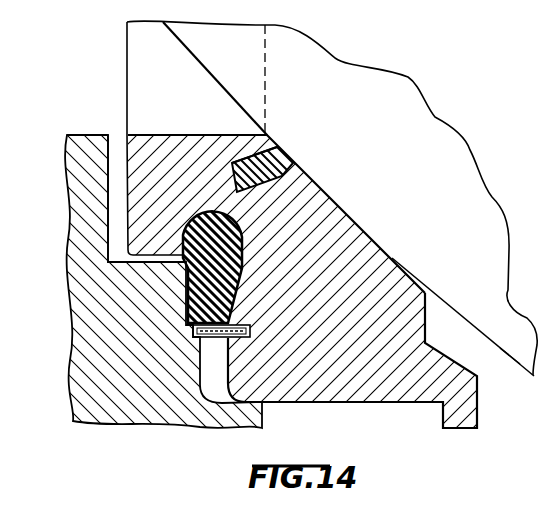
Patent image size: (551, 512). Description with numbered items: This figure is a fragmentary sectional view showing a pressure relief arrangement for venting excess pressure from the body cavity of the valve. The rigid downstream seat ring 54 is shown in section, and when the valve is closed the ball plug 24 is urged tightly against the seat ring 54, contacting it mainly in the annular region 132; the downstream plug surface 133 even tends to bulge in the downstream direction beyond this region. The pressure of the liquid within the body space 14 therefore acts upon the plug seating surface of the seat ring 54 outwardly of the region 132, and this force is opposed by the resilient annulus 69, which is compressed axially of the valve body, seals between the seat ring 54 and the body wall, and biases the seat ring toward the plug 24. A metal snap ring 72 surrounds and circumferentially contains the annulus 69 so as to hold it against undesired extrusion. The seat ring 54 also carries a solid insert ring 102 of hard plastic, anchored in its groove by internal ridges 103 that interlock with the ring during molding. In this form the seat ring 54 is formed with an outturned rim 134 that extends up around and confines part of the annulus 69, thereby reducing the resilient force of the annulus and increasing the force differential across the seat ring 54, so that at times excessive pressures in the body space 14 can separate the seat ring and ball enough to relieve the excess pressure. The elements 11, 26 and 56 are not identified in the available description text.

The housing body 11 is at (86, 368).
The body space 14 is at (483, 367).
The plug 24 is at (424, 172).
The piston surface 26 is at (503, 351).
The seat ring 54 is at (413, 319).
The sleeve 56 is at (392, 258).
The resilient annulus 69 is at (185, 269).
The metal snap ring 72 is at (216, 338).
The insert ring 102 is at (285, 160).
The internal ridges 103 is at (270, 150).
The annular region 132 is at (350, 222).
The downstream plug surface 133 is at (203, 66).
The outturned rim 134 is at (138, 215).